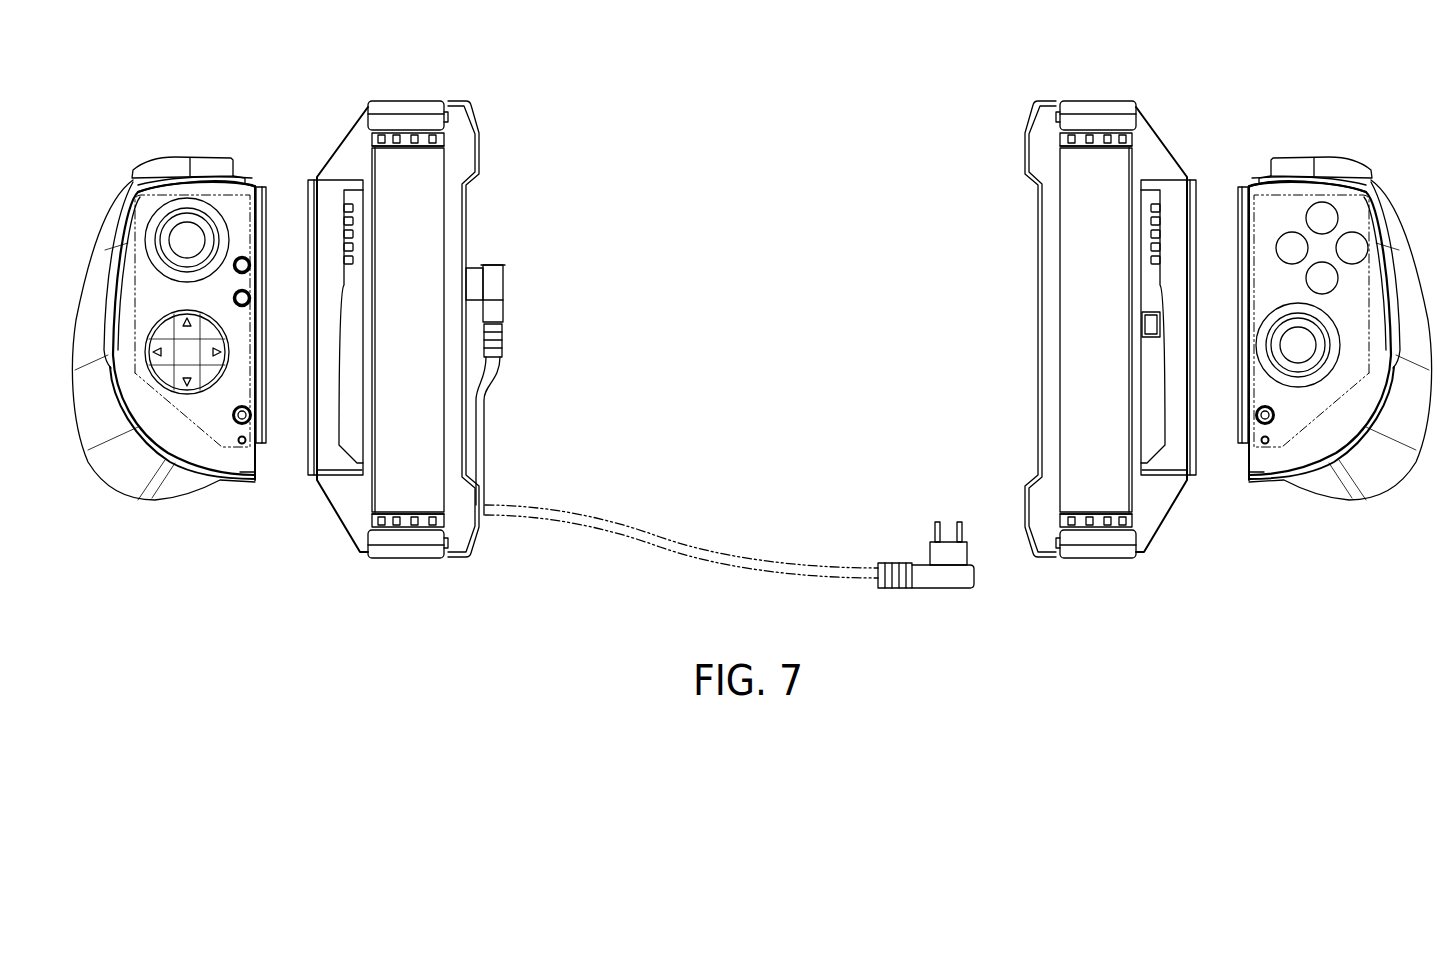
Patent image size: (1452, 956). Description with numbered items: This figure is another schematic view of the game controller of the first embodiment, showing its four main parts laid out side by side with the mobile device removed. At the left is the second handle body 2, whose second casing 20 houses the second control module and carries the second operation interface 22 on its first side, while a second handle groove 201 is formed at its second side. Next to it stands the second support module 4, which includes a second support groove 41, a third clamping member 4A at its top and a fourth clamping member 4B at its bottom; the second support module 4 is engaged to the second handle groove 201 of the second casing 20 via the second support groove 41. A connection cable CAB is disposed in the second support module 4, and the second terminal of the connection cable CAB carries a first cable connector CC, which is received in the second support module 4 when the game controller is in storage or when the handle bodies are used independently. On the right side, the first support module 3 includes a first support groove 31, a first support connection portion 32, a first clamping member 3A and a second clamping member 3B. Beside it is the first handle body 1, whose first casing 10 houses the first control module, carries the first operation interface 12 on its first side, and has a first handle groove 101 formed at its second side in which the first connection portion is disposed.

The first handle body 1 is at (1388, 213).
The first casing 10 is at (1382, 478).
The first operation interface 12 is at (1290, 165).
The first handle groove 101 is at (1238, 196).
The second handle body 2 is at (114, 213).
The second casing 20 is at (124, 478).
The second operation interface 22 is at (210, 165).
The second handle groove 201 is at (270, 196).
The first support module 3 is at (1160, 507).
The first clamping member 3A is at (1097, 122).
The second clamping member 3B is at (1097, 560).
The first support groove 31 is at (1197, 455).
The first support connection portion 32 is at (1142, 323).
The second support module 4 is at (347, 507).
The third clamping member 4A is at (406, 122).
The fourth clamping member 4B is at (405, 560).
The second support groove 41 is at (304, 197).
The first cable connector CC is at (503, 288).
The connection cable CAB is at (484, 426).